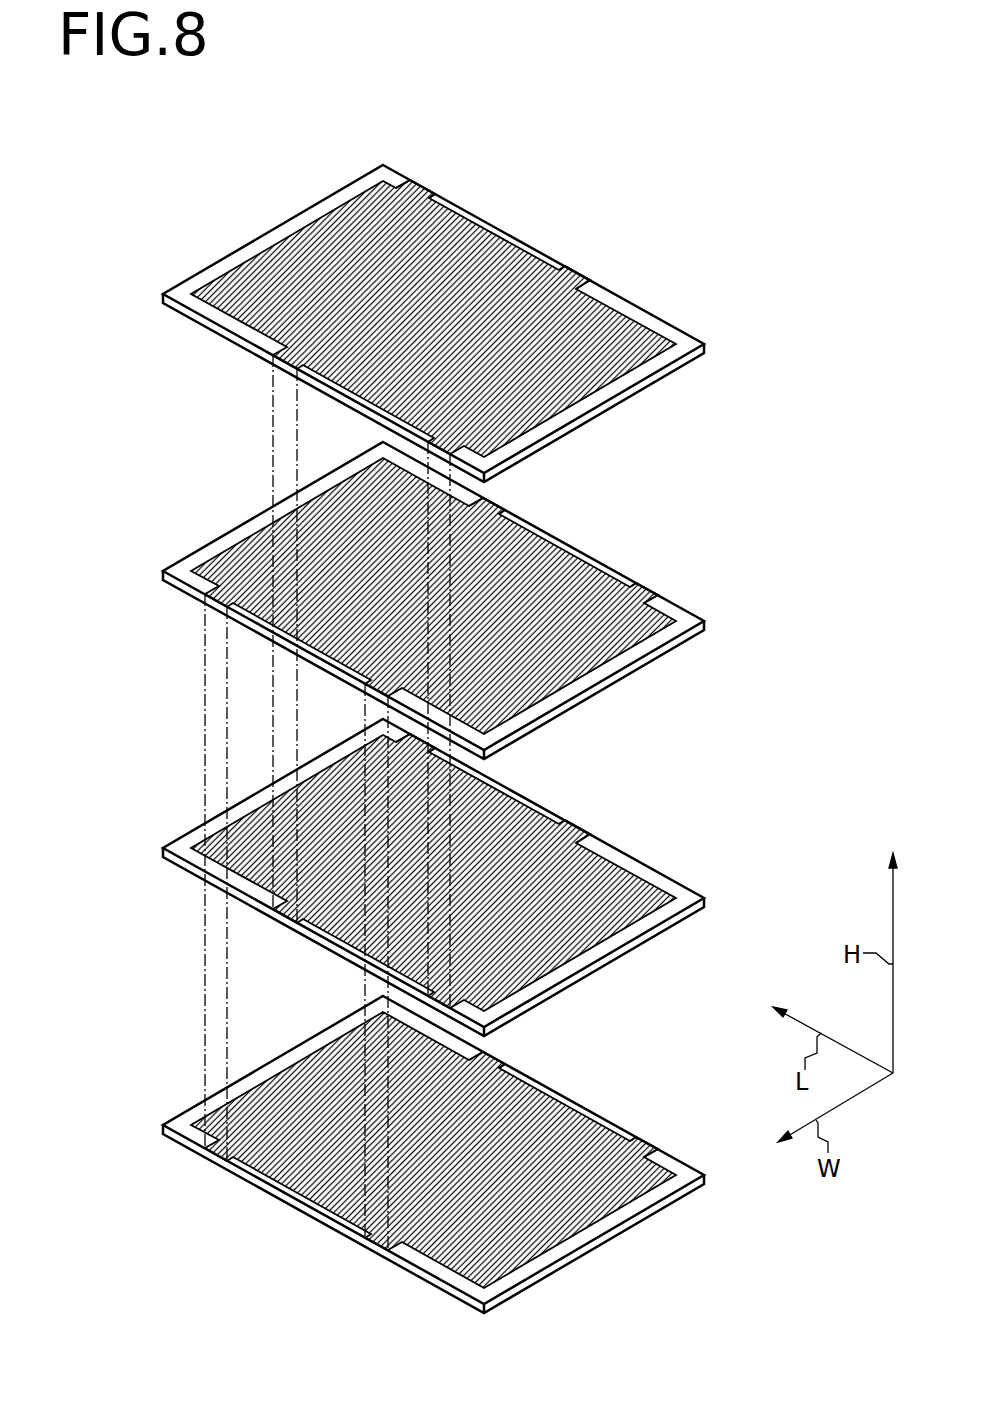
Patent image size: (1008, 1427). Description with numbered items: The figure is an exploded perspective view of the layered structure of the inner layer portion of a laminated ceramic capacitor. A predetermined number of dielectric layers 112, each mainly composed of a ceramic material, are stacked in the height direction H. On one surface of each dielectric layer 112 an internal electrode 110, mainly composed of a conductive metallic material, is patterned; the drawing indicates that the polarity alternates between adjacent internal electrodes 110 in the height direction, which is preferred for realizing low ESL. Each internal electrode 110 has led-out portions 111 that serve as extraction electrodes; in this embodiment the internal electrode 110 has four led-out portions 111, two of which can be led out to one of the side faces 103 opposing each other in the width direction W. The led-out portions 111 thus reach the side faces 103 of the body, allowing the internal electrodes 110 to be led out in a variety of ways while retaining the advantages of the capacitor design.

The side face 103 is at (708, 350).
The internal electrode 110 is at (507, 283).
The led-out portion 111 is at (413, 188).
The dielectric layer 112 is at (184, 294).